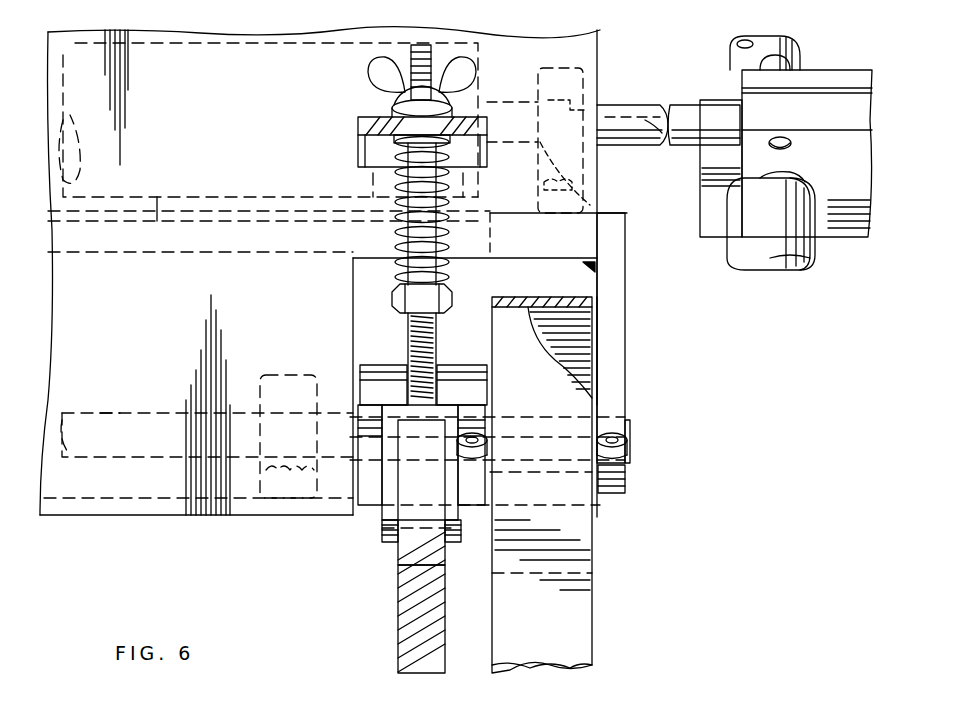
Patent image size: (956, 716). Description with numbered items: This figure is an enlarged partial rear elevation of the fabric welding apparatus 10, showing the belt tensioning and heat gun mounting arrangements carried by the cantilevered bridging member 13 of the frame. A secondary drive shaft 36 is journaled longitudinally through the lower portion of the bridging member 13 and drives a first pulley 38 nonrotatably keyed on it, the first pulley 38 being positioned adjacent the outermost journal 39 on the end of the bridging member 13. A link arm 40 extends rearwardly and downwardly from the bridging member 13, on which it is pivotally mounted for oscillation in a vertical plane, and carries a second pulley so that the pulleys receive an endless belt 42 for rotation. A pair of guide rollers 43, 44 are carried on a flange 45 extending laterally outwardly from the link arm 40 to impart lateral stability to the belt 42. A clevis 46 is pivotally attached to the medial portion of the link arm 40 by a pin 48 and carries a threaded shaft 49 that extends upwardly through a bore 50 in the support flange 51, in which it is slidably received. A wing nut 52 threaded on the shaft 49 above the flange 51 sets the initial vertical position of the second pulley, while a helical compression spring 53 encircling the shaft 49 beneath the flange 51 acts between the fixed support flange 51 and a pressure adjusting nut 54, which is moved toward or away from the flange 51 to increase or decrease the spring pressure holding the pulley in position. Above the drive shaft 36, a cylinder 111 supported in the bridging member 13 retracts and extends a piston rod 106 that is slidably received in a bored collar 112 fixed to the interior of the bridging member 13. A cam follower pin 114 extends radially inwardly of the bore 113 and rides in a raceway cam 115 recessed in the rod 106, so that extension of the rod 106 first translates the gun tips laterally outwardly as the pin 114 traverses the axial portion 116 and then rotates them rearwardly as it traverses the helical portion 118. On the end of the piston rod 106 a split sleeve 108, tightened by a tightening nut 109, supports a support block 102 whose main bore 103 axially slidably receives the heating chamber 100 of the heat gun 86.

The apparatus for welding fabric 10 is at (600, 46).
The bridging member 13 is at (140, 515).
The secondary drive shaft 36 is at (112, 413).
The first pulley 38 is at (575, 330).
The outermost journal 39 is at (610, 355).
The link arm 40 is at (398, 640).
The endless belt 42 is at (562, 297).
The guide roller 43 is at (485, 432).
The guide roller 44 is at (627, 440).
The flange 45 is at (628, 428).
The clevis 46 is at (383, 536).
The pin 48 is at (462, 525).
The threaded shaft 49 is at (436, 333).
The bore 50 is at (392, 108).
The support flange 51 is at (358, 120).
The wing nut 52 is at (370, 70).
The helical compression spring 53 is at (395, 230).
The pressure adjusting nut 54 is at (392, 296).
The heat gun 86 is at (722, 252).
The heating chamber 100 is at (758, 232).
The support block 102 is at (700, 183).
The main bore 103 is at (795, 178).
The piston rod 106 is at (688, 108).
The split sleeve 108 is at (755, 80).
The tightening nut 109 is at (800, 58).
The cylinder 111 is at (159, 222).
The bored collar 112 is at (552, 68).
The bore 113 is at (540, 146).
The cam follower pin 114 is at (552, 100).
The raceway cam 115 is at (603, 112).
The axial portion 116 is at (650, 130).
The helical portion 118 is at (600, 138).